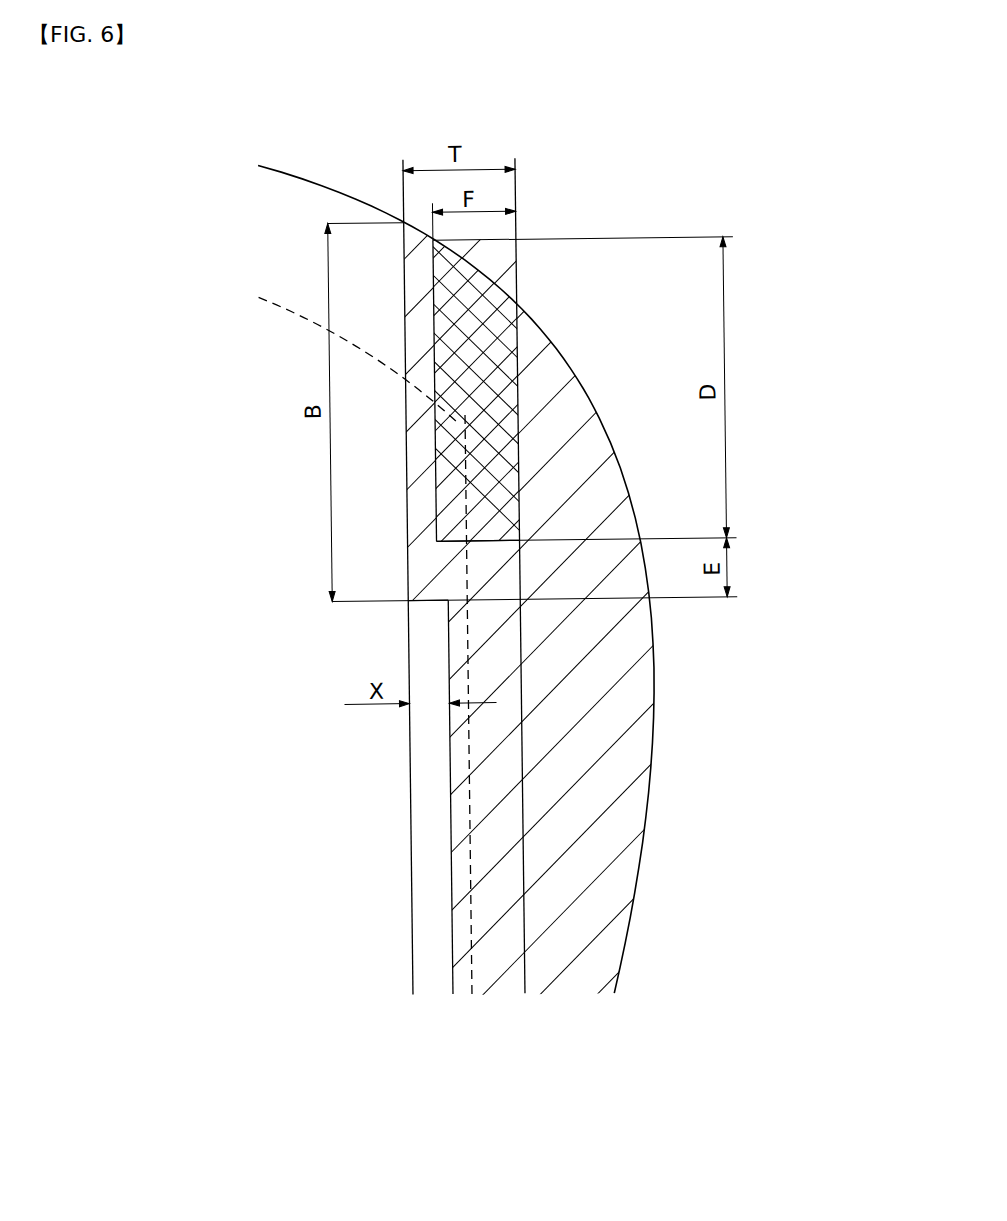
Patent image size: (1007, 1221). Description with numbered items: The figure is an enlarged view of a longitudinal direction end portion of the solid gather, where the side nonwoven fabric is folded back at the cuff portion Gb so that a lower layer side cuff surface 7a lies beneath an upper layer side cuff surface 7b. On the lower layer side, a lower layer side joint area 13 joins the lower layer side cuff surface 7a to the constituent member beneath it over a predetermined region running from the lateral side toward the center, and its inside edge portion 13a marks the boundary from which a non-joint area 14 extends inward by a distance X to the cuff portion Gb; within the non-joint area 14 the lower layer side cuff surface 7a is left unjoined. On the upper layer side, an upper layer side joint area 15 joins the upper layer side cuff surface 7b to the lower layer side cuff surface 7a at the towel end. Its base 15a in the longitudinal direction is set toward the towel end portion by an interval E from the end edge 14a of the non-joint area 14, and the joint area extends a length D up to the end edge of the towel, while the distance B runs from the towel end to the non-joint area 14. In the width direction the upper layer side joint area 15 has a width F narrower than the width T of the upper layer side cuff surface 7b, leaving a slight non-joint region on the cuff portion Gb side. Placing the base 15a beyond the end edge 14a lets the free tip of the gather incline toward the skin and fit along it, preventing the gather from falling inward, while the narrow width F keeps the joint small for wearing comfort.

The lower layer side cuff surface 7a is at (613, 953).
The upper layer side cuff surface 7b is at (524, 962).
The lower layer side joint area 13 is at (603, 738).
The inside edge portion of the lower layer side joint area 13a is at (450, 880).
The non-joint area 14 is at (422, 753).
The end edge of the non-joint area 14a is at (432, 604).
The upper layer side joint area 15 is at (490, 330).
The base of the upper layer side joint area 15a is at (483, 543).
The cuff portion Gb is at (412, 813).